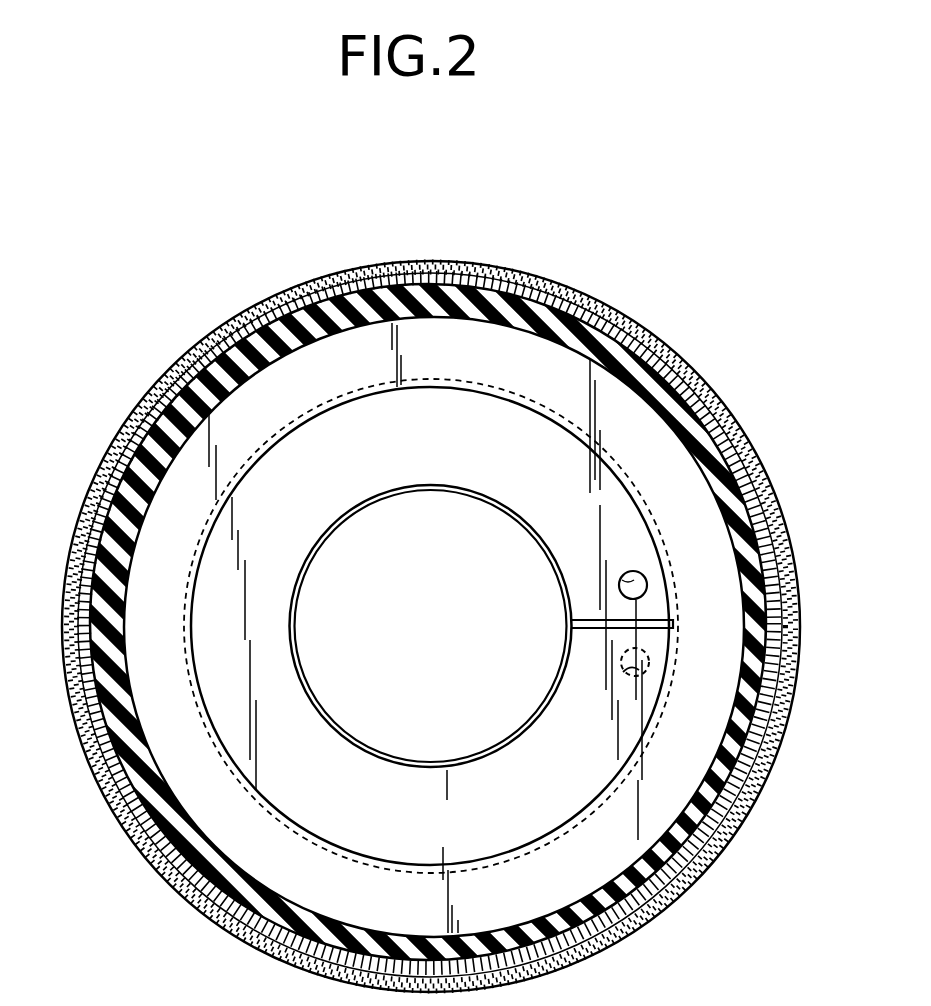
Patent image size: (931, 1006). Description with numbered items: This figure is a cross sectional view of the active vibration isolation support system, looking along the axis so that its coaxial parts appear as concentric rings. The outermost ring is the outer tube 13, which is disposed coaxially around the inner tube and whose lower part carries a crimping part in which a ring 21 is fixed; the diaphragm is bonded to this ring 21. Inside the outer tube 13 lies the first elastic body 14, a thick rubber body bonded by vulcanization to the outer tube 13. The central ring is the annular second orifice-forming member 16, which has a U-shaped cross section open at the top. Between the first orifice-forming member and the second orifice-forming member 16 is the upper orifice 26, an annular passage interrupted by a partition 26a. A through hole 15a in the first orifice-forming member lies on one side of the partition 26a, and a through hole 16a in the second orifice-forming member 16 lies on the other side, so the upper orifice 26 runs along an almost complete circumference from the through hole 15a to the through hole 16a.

The outer tube 13 is at (638, 332).
The ring 21 is at (238, 340).
The first elastic body 14 is at (438, 304).
The upper orifice 26 is at (506, 462).
The partition 26a is at (575, 640).
The second orifice-forming member 16 is at (360, 512).
The through hole 16a is at (620, 582).
The through hole 15a is at (620, 673).